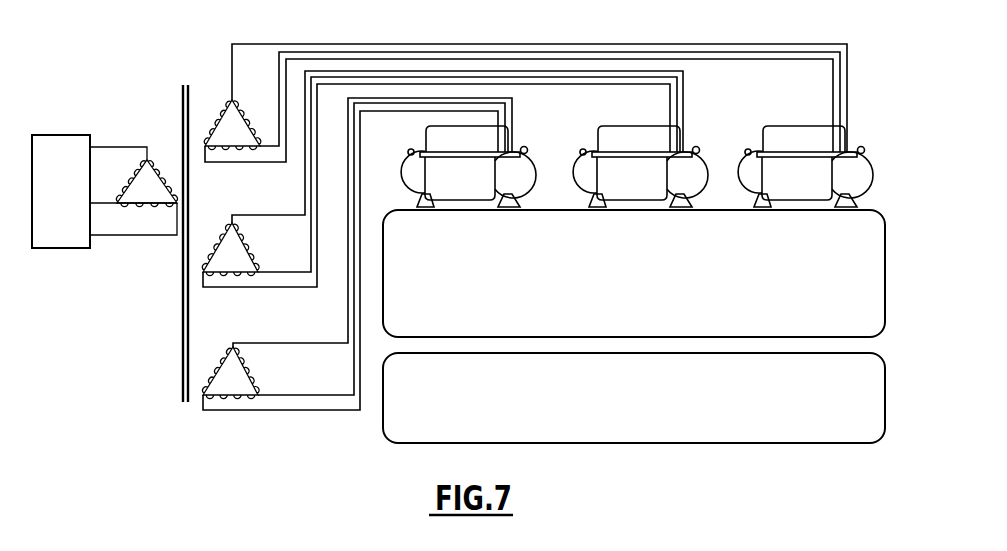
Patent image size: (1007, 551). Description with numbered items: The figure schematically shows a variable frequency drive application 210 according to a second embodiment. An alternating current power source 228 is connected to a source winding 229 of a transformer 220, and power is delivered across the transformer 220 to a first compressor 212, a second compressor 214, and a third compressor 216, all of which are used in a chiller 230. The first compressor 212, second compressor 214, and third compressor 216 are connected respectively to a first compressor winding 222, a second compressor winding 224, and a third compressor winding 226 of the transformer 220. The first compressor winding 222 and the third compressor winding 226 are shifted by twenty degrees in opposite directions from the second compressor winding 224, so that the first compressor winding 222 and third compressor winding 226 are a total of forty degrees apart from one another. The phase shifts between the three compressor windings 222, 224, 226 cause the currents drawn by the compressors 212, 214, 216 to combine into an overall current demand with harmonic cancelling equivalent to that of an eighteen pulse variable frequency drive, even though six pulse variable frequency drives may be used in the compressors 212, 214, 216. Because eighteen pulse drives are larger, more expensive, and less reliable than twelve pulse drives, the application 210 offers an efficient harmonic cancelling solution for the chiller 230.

The variable frequency drive application 210 is at (111, 60).
The first compressor 212 is at (812, 126).
The second compressor 214 is at (645, 126).
The third compressor 216 is at (425, 136).
The transformer 220 is at (138, 283).
The first compressor winding 222 is at (232, 100).
The second compressor winding 224 is at (232, 223).
The third compressor winding 226 is at (233, 347).
The alternating current power source 228 is at (82, 200).
The source winding 229 is at (152, 170).
The chiller 230 is at (893, 205).